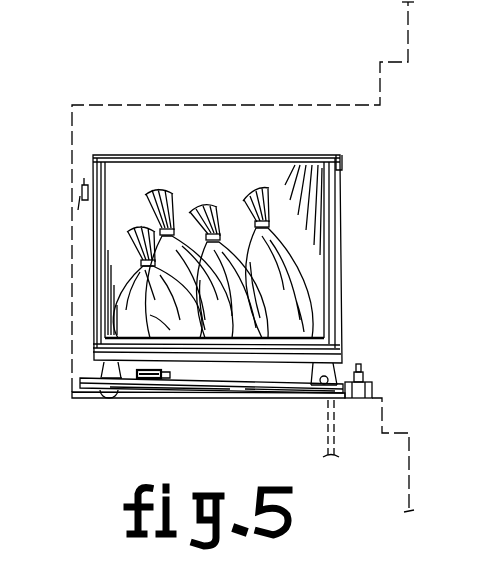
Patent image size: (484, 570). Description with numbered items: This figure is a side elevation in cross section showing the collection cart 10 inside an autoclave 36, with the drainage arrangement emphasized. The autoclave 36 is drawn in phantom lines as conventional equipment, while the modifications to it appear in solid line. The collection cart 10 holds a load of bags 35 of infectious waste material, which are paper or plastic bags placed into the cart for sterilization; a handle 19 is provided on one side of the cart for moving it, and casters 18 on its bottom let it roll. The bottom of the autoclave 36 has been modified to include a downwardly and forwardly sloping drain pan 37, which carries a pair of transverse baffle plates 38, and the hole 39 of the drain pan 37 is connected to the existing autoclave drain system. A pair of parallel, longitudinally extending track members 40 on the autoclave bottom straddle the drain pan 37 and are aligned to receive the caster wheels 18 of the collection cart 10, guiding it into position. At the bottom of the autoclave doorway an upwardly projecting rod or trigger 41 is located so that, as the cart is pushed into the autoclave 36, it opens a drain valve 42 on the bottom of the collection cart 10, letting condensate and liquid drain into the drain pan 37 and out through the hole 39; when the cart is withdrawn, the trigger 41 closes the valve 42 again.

The collection cart 10 is at (342, 228).
The casters 18 is at (338, 376).
The handle 19 is at (82, 190).
The bags 35 is at (248, 203).
The autoclave 36 is at (362, 105).
The drain pan 37 is at (125, 392).
The transverse baffle plates 38 is at (184, 389).
The hole 39 is at (327, 405).
The track members 40 is at (83, 405).
The trigger 41 is at (363, 375).
The drain valve 42 is at (146, 382).